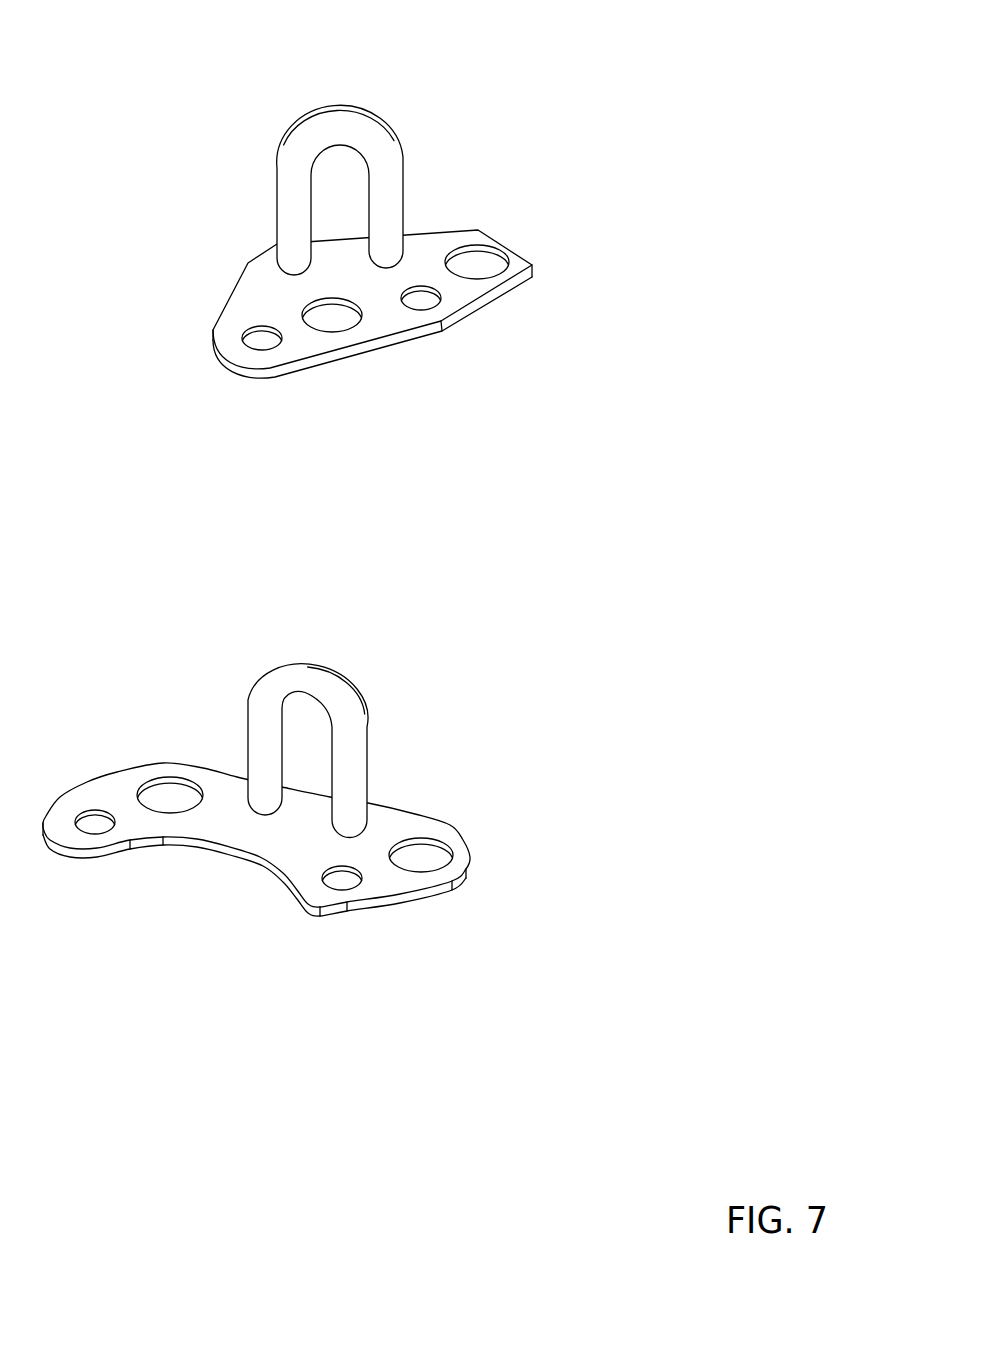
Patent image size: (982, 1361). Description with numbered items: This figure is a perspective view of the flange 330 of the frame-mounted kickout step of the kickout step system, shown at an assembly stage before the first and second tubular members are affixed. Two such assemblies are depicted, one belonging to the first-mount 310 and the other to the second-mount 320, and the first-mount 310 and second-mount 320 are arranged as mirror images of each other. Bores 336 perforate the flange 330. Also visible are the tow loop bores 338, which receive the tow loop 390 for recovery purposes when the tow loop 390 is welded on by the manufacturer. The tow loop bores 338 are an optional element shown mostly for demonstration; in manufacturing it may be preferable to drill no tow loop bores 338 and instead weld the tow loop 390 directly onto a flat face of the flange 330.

The first-mount 310 is at (407, 253).
The second-mount 320 is at (393, 820).
The flange 330 is at (233, 353).
The tow loop 390 is at (353, 108).
The bores 336 is at (342, 882).
The tow loop bores 338 is at (462, 803).